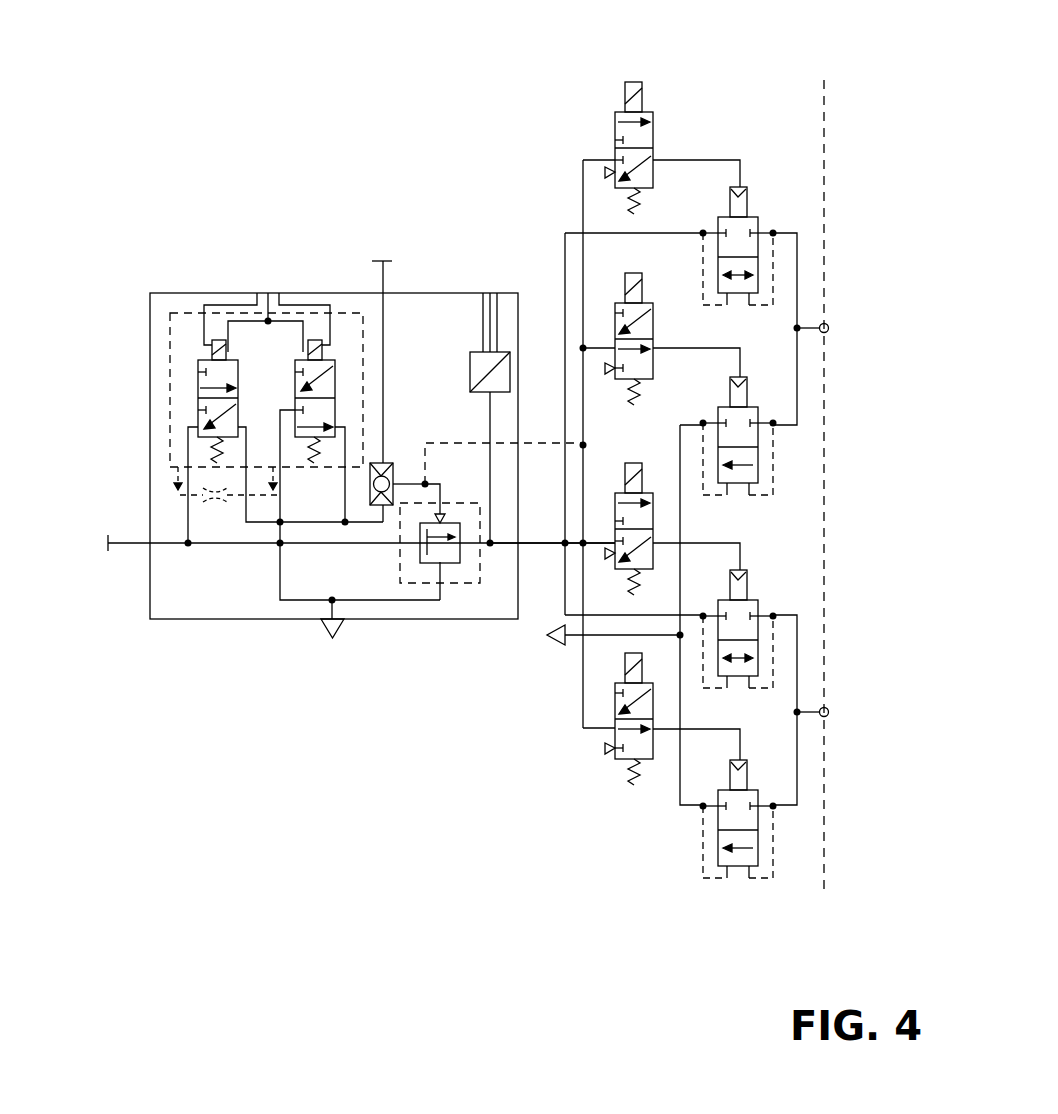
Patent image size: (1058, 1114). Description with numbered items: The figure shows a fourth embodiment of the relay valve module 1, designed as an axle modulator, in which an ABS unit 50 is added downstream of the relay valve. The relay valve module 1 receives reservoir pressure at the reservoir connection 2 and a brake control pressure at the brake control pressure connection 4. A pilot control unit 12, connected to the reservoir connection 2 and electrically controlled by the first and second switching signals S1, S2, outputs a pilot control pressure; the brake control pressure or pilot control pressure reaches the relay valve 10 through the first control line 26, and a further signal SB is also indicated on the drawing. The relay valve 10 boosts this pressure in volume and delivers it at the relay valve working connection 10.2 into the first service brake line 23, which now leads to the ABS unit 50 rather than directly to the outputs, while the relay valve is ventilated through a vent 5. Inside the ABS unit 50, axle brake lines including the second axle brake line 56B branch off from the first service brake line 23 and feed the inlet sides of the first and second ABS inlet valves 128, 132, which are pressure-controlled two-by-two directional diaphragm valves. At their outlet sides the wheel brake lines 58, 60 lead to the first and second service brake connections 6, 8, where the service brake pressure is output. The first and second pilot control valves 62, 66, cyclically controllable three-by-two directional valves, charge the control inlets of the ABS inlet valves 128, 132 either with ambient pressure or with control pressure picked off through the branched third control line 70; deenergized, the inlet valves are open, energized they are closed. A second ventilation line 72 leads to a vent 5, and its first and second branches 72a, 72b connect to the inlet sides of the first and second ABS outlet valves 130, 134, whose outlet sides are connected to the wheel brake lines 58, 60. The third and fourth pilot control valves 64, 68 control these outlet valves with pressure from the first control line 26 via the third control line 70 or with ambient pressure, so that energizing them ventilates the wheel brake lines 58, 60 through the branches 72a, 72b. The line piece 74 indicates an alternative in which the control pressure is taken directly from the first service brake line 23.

The relay valve module 1 is at (182, 262).
The reservoir connection 2 is at (150, 541).
The brake control pressure connection 4 is at (385, 292).
The vent 5 is at (334, 640).
The first service brake connection 6 is at (828, 331).
The second service brake connection 8 is at (828, 715).
The relay valve 10 is at (443, 515).
The relay valve working connection 10.2 is at (462, 546).
The pilot control unit 12 is at (163, 325).
The first service brake line 23 is at (502, 541).
The first control line 26 is at (386, 463).
The ABS unit 50 is at (592, 72).
The second axle brake line 56B is at (566, 600).
The wheel brake line 58 is at (800, 329).
The wheel brake line 60 is at (800, 713).
The first pilot control valve 62 is at (662, 141).
The third pilot control valve 64 is at (662, 337).
The second pilot control valve 66 is at (662, 529).
The fourth pilot control valve 68 is at (668, 715).
The third control line 70 is at (448, 443).
The second ventilation line 72 is at (572, 640).
The first branch of second ventilation line 72a is at (678, 425).
The second branch of second ventilation line 72b is at (678, 800).
The line piece 74 is at (574, 540).
The first ABS inlet valve 128 is at (692, 252).
The first ABS outlet valve 130 is at (692, 444).
The second ABS inlet valve 132 is at (780, 599).
The second ABS outlet valve 134 is at (692, 843).
The first switching signal S1 is at (265, 292).
The second switching signal S2 is at (272, 292).
The pressure sensor signal SB is at (495, 292).